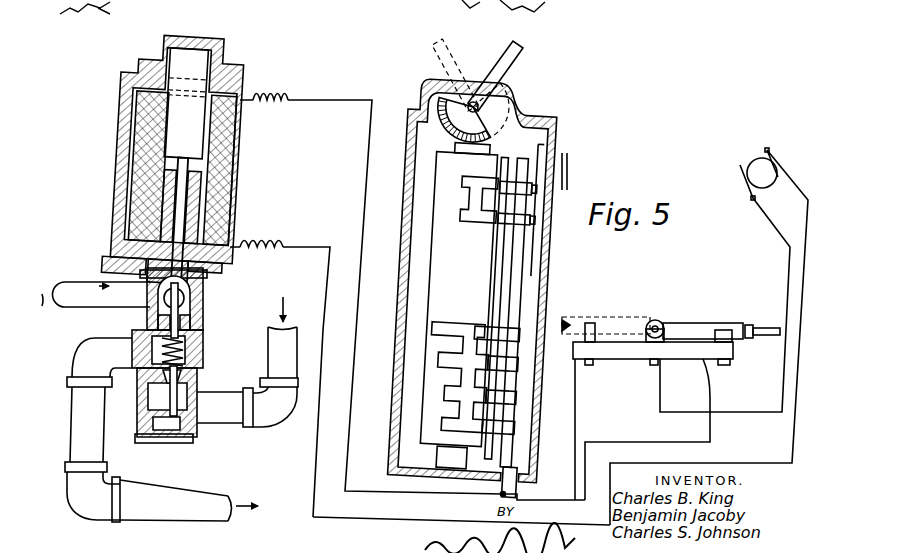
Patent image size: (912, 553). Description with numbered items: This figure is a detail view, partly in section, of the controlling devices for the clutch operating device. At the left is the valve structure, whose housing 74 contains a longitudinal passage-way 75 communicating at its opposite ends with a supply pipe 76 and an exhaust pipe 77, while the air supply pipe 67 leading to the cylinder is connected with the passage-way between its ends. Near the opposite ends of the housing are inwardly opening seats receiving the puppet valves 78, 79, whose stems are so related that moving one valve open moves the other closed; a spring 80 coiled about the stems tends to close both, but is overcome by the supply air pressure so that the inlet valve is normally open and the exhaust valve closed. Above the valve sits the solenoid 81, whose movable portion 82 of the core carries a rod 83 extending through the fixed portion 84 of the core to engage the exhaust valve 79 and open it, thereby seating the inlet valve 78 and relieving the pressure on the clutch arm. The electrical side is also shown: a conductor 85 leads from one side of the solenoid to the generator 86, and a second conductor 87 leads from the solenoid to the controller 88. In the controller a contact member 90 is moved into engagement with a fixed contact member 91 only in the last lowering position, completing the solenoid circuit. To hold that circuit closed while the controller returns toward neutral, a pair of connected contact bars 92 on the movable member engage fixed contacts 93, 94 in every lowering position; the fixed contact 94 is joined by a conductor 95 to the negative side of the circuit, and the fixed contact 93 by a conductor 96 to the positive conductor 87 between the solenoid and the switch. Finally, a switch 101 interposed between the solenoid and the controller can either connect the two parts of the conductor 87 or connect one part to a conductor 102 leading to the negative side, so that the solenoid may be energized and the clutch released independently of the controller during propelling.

The air supply pipe 67 is at (73, 388).
The housing 74 is at (140, 326).
The longitudinal passage-way 75 is at (140, 345).
The supply pipe 76 is at (276, 412).
The exhaust pipe 77 is at (95, 280).
The puppet valve 78 is at (198, 379).
The puppet valve 79 is at (192, 319).
The spring 80 is at (203, 350).
The solenoid 81 is at (236, 187).
The movable portion of the core 82 is at (200, 138).
The rod 83 is at (232, 218).
The fixed portion of the core 84 is at (165, 200).
The conductor 85 is at (380, 519).
The generator 86 is at (761, 158).
The conductor 87 is at (362, 195).
The controller 88 is at (540, 125).
The contact member 90 is at (447, 418).
The fixed contact member 91 is at (516, 426).
The contact bars 92 is at (463, 192).
The fixed contact 93 is at (537, 183).
The fixed contact 94 is at (512, 224).
The conductor 95 is at (541, 153).
The conductor 96 is at (540, 137).
The switch 101 is at (687, 322).
The conductor 102 is at (580, 425).